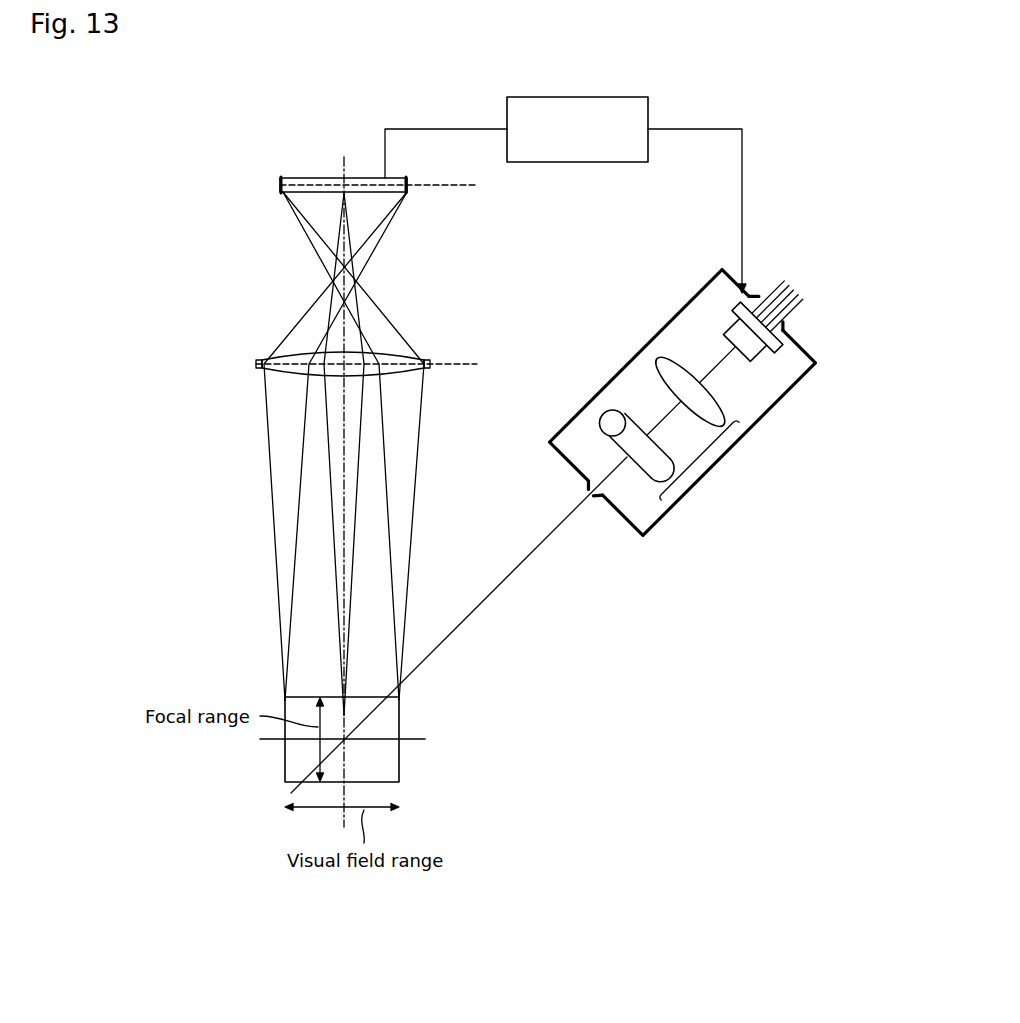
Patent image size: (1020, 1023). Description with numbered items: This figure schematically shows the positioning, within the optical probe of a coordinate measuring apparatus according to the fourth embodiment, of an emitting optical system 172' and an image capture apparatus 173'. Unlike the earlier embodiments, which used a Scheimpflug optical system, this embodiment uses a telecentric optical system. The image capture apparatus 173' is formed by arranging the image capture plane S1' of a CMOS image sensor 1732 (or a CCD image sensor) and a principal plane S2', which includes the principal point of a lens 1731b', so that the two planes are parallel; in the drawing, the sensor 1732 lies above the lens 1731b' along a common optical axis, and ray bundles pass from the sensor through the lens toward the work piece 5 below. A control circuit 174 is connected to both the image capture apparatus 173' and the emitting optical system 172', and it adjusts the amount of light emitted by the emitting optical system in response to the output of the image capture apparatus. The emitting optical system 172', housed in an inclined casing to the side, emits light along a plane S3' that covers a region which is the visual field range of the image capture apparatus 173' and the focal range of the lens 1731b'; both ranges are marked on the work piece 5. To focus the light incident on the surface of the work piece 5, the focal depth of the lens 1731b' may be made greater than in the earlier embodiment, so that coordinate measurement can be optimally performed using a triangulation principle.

The control circuit 174 is at (577, 97).
The image capture apparatus 173' is at (306, 440).
The CMOS image sensor 1732 is at (280, 185).
The lens 1731b' is at (293, 361).
The emitting optical system 172' is at (703, 392).
The work piece 5 is at (418, 735).
The image capture plane S1' is at (407, 197).
The principal plane S2' is at (395, 353).
The emitting plane S3' is at (459, 625).